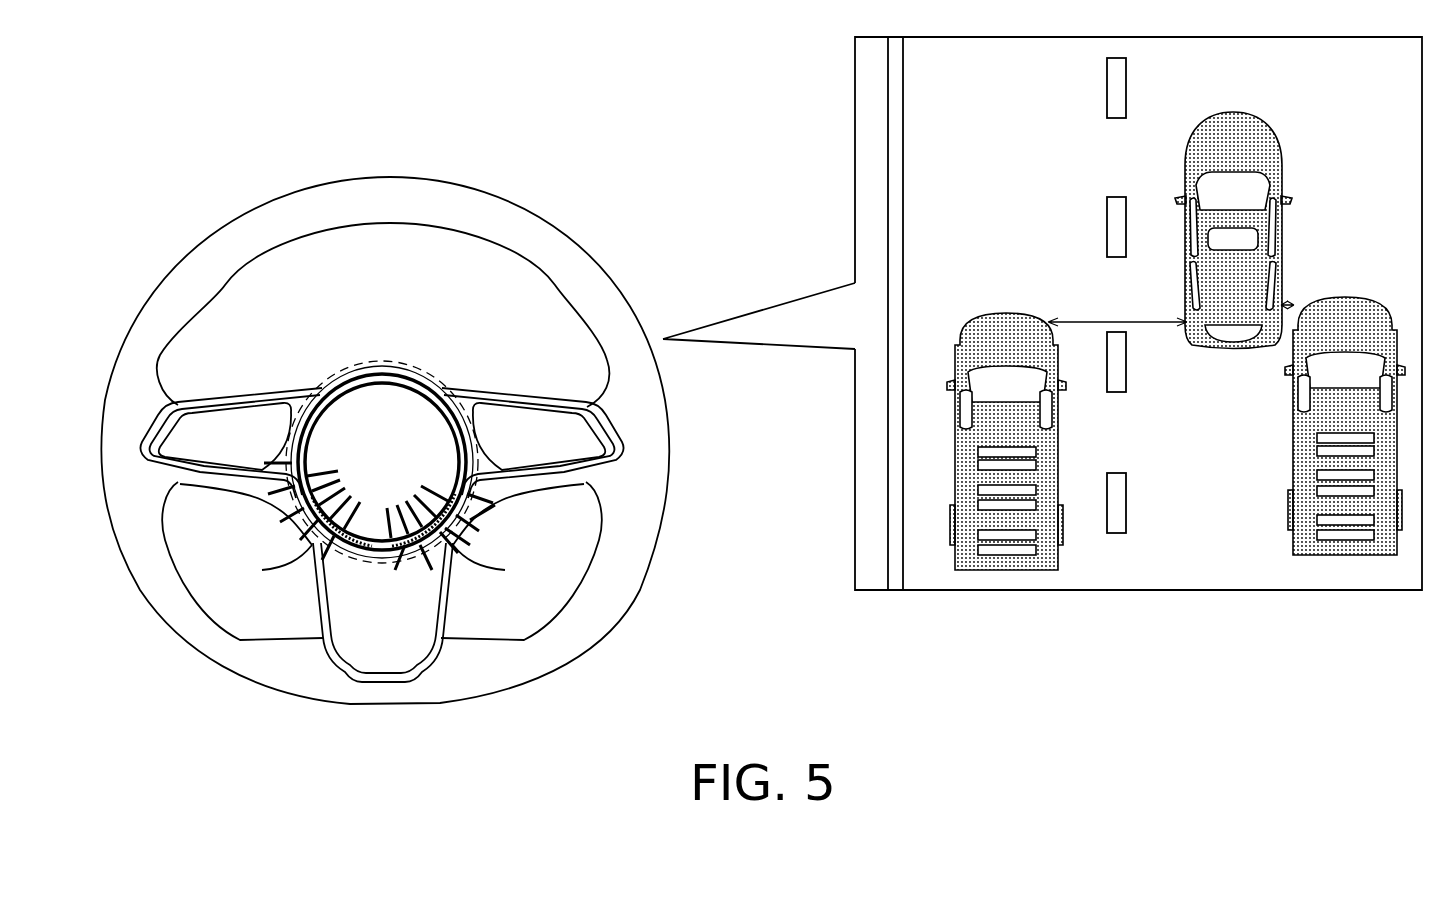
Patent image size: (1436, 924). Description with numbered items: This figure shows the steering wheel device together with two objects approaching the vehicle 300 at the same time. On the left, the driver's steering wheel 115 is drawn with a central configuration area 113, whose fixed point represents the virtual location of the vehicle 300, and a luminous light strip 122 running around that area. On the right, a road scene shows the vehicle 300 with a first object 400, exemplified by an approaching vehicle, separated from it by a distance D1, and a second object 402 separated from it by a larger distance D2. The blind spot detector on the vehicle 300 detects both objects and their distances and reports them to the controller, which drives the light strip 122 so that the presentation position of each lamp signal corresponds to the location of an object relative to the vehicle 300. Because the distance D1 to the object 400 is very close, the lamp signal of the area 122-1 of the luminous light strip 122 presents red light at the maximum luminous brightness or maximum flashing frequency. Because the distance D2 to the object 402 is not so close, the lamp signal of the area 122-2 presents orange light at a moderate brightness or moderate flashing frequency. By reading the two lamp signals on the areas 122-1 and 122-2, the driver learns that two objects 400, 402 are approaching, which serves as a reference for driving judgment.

The steering wheel 115 is at (462, 208).
The configuration area 113 is at (422, 377).
The luminous light strip 122 is at (427, 405).
The area of the luminous light strip 122-1 is at (450, 513).
The area of the luminous light strip 122-2 is at (322, 522).
The vehicle 300 is at (1259, 125).
The object 400 is at (1297, 512).
The object 402 is at (1055, 445).
The distance D1 is at (1292, 300).
The distance D2 is at (1117, 307).